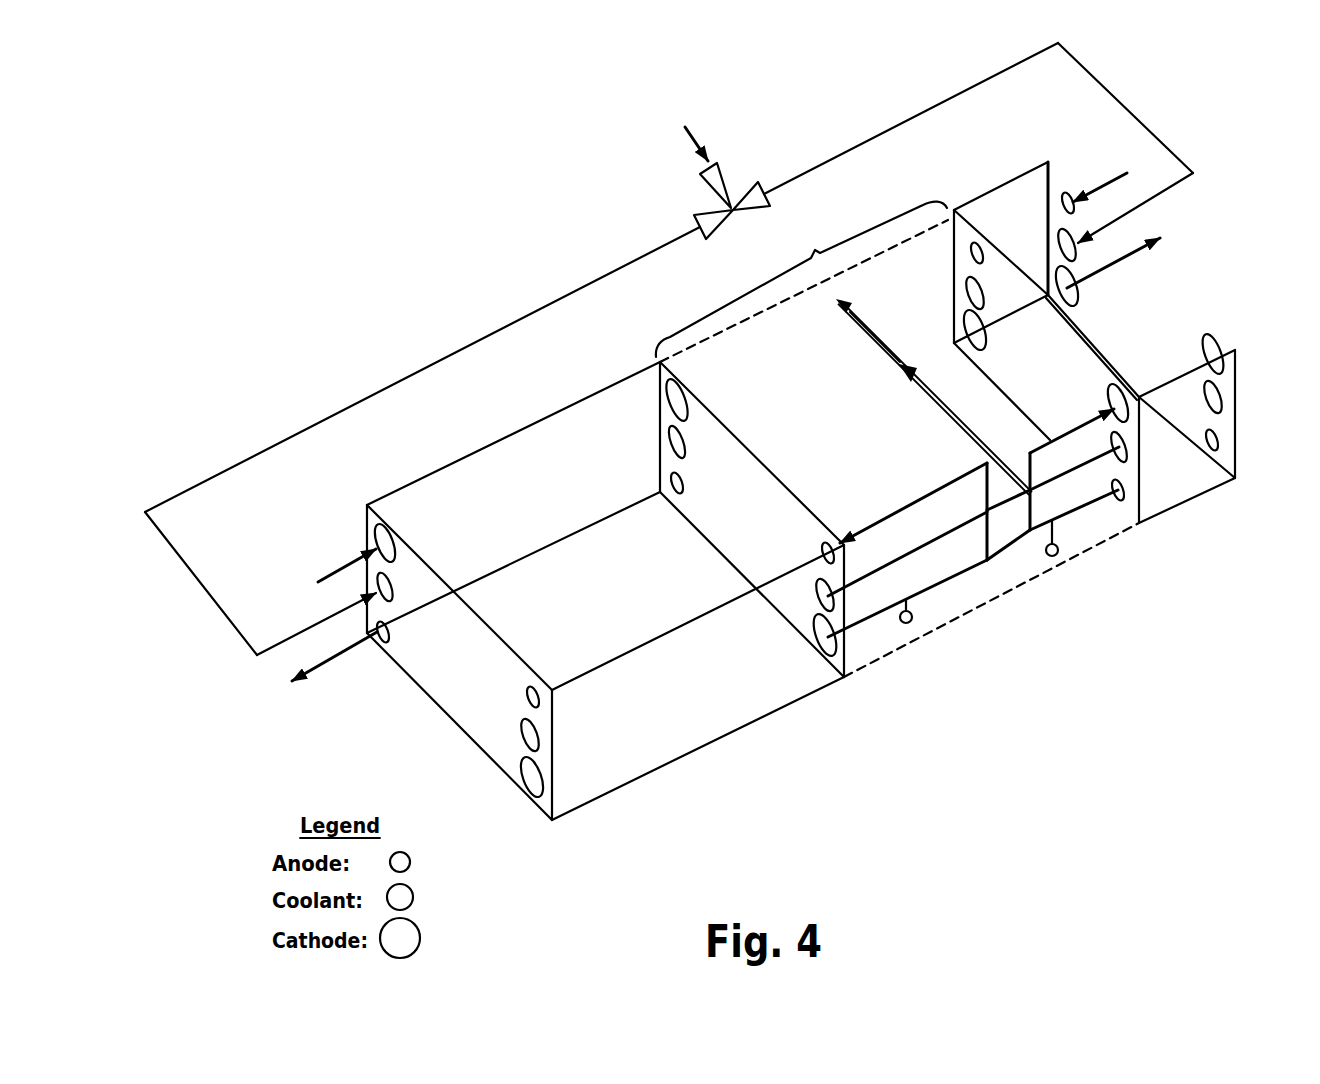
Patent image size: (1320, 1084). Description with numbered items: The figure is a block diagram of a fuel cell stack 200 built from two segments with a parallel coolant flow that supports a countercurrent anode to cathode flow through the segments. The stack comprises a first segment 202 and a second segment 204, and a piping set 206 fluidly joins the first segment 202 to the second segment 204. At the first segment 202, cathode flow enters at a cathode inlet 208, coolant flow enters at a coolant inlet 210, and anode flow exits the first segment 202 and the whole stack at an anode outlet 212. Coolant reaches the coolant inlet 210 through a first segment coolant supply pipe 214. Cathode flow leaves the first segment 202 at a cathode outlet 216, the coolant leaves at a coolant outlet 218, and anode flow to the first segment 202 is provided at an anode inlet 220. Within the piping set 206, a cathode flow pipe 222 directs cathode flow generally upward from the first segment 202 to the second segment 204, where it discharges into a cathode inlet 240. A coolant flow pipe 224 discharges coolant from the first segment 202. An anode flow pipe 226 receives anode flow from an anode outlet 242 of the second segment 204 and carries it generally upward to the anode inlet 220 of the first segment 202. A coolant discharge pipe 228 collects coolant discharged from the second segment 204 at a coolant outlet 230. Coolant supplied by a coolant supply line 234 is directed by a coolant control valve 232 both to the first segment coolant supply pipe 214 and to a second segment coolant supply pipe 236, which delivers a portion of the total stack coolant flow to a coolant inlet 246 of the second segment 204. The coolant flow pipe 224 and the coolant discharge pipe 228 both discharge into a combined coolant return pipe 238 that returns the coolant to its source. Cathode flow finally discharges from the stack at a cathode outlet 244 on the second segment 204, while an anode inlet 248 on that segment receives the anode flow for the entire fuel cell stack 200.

The fuel cell stack 200 is at (612, 235).
The first segment 202 is at (445, 497).
The second segment 204 is at (985, 217).
The piping set 206 is at (897, 439).
The cathode inlet 208 is at (372, 530).
The coolant inlet 210 is at (378, 578).
The anode outlet 212 is at (385, 640).
The first segment coolant supply pipe 214 is at (331, 416).
The cathode outlet 216 is at (818, 640).
The coolant outlet 218 is at (822, 598).
The anode inlet 220 is at (822, 548).
The cathode flow pipe 222 is at (957, 570).
The coolant flow pipe 224 is at (935, 403).
The anode flow pipe 226 is at (907, 505).
The coolant discharge pipe 228 is at (895, 347).
The coolant outlet 230 is at (1139, 463).
The coolant control valve 232 is at (727, 188).
The coolant supply line 234 is at (703, 151).
The second segment coolant supply pipe 236 is at (897, 128).
The combined coolant return pipe 238 is at (878, 346).
The cathode inlet 240 is at (1113, 395).
The anode outlet 242 is at (1120, 493).
The cathode outlet 244 is at (1077, 300).
The coolant inlet 246 is at (1062, 235).
The anode inlet 248 is at (1067, 197).